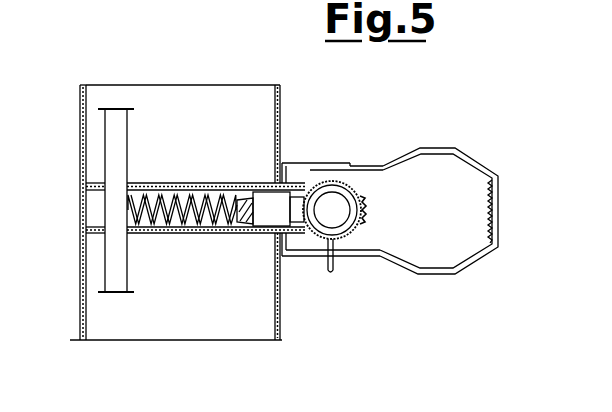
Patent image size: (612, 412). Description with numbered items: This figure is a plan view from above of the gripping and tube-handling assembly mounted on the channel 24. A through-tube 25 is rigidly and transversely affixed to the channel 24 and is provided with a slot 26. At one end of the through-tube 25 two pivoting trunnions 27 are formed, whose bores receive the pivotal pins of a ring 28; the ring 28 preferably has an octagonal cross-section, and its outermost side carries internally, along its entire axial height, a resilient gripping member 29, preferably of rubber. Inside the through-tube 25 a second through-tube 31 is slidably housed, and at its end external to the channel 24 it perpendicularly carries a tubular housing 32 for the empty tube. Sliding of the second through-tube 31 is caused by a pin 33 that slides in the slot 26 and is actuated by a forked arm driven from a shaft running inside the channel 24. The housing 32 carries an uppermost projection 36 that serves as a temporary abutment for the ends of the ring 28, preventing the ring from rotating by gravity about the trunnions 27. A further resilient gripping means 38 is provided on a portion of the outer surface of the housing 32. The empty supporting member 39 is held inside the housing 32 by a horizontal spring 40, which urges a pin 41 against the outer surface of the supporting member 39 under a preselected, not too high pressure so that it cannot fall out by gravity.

The channel 24 is at (80, 273).
The through-tube 25 is at (247, 182).
The slot 26 is at (197, 182).
The pivoting trunnions 27 is at (327, 162).
The ring 28 is at (441, 148).
The resilient gripping member 29 is at (487, 180).
The second through-tube 31 is at (234, 226).
The tubular housing 32 is at (349, 185).
The pin 33 is at (117, 148).
The uppermost projection 36 is at (331, 274).
The resilient gripping means 38 is at (367, 209).
The empty supporting member 39 is at (342, 226).
The horizontal spring 40 is at (198, 227).
The pin 41 is at (296, 205).